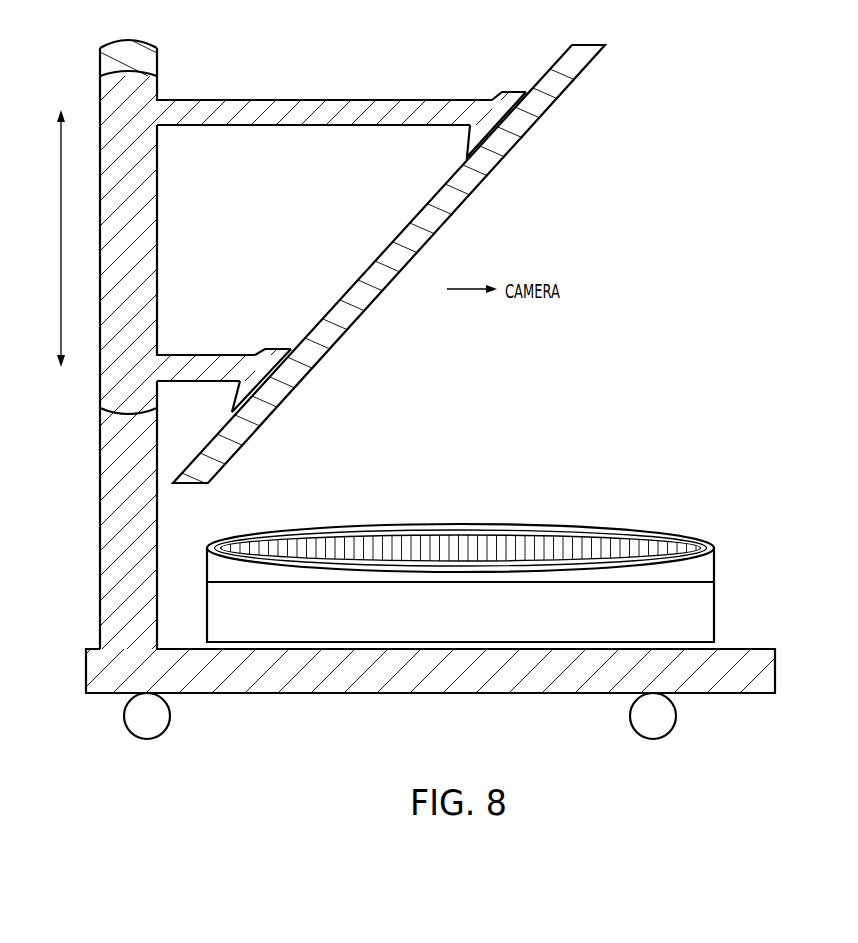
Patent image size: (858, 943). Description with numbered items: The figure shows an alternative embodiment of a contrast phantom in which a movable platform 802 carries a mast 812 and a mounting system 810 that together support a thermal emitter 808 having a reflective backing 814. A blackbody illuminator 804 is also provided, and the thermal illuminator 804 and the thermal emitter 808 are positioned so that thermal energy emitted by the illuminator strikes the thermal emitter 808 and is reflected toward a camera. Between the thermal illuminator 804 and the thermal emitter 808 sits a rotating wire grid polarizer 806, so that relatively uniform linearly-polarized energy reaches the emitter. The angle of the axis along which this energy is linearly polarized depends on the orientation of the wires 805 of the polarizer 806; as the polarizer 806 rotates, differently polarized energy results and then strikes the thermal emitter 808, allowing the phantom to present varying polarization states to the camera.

The base cart 802 is at (775, 676).
The blackbody temperature bath 804 is at (714, 614).
The blackbody surface 805 is at (520, 540).
The bath rim 806 is at (700, 540).
The mirror 808 is at (507, 155).
The vertical adjustment direction 810 is at (99, 392).
The vertical support post 812 is at (74, 560).
The mirror mount bracket 814 is at (364, 272).